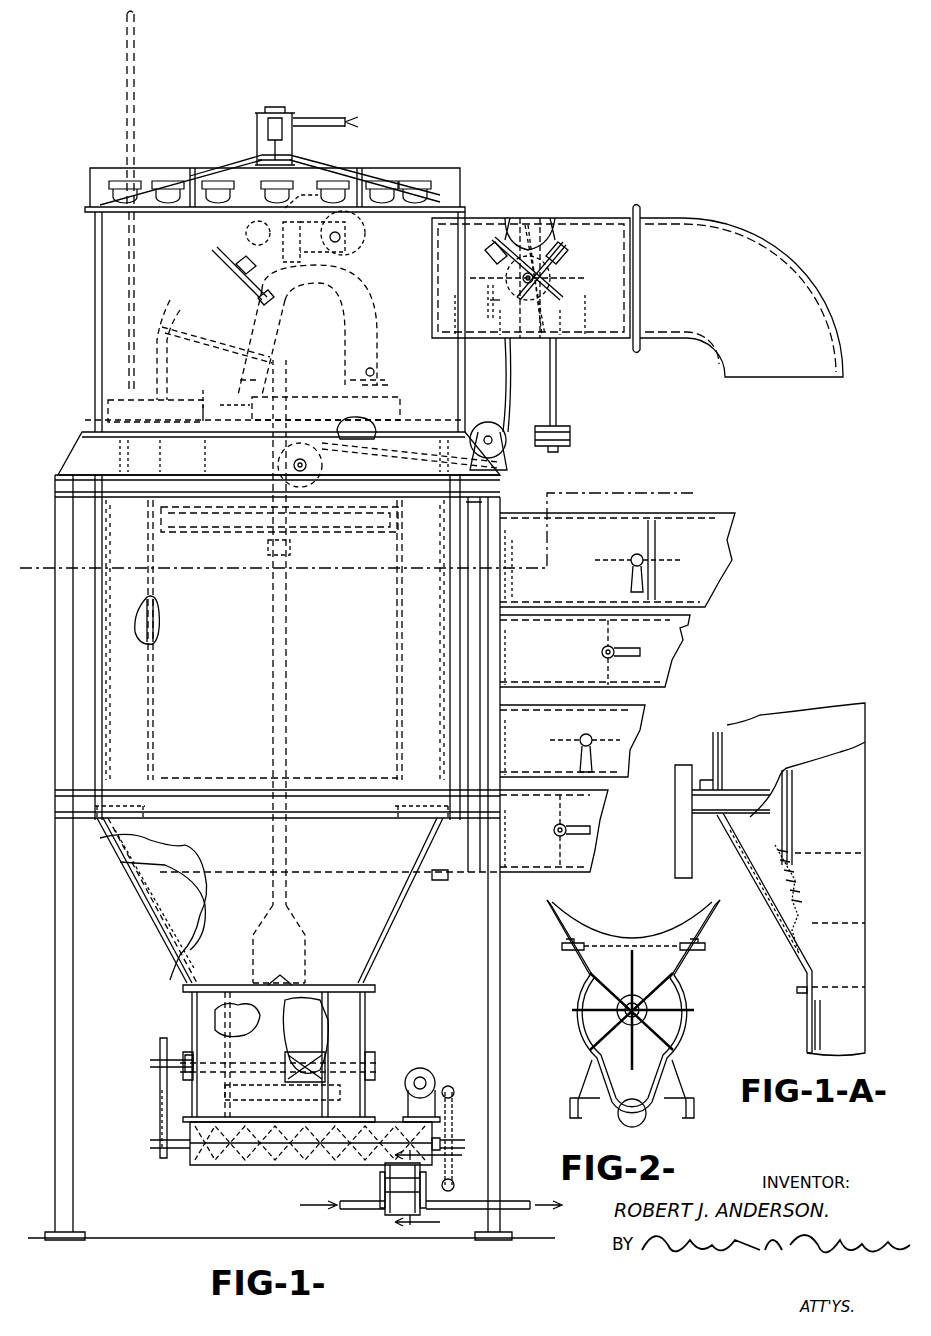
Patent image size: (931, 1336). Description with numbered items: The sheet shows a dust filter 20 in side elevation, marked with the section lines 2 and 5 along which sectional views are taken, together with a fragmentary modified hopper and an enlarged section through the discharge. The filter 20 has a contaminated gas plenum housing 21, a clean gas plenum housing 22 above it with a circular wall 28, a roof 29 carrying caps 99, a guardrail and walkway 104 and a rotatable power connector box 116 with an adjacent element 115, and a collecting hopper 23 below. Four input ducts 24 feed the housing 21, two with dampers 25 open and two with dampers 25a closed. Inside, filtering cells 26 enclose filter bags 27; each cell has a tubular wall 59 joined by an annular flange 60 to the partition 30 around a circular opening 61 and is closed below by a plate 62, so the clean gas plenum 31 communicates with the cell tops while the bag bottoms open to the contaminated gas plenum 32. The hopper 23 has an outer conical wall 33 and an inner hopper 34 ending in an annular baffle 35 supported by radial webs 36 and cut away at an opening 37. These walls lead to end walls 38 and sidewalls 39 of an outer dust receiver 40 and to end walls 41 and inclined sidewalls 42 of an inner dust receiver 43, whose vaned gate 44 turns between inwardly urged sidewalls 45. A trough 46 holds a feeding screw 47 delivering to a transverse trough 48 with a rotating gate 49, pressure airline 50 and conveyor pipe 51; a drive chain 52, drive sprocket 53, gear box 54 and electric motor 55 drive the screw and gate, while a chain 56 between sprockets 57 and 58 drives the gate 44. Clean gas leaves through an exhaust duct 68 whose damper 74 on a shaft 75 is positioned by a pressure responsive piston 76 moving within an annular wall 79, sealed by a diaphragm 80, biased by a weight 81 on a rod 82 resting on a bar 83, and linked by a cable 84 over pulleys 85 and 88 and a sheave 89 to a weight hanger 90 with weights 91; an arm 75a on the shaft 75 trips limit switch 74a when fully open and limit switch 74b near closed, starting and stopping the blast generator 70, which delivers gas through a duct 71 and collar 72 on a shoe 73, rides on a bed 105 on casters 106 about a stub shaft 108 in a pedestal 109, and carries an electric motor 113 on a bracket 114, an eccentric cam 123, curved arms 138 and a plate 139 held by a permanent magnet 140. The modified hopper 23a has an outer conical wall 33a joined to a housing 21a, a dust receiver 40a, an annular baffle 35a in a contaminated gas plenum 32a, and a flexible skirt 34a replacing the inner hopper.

In FIG. 1, the section line 2— 2 is at (435, 1189).
In FIG. 1, the section line 5- 5 is at (30, 550).
In FIG. 1, the dust filter 20 is at (69, 351).
In FIG. 1, the contaminated gas plenum housing 21 is at (84, 701).
In FIG. 1A, the contaminated gas plenum housing 21a is at (704, 756).
In FIG. 1, the clean gas plenum housing 22 is at (84, 289).
In FIG. 1, the collecting hopper 23 is at (165, 977).
In FIG. 1A, the collecting hopper 23a is at (794, 971).
In FIG. 1, the input contaminated gas ducts 24 is at (585, 587).
In FIG. 1, the dampers 25 is at (645, 550).
In FIG. 1, the dampers 25a is at (615, 640).
In FIG. 1, the filtering cells 26 is at (153, 660).
In FIG. 1, the filter bags 27 is at (135, 88).
In FIG. 1, the circular wall 28 is at (175, 258).
In FIG. 1, the roof 29 is at (245, 165).
In FIG. 1, the partition 30 is at (348, 424).
In FIG. 1, the clean gas plenum 31 is at (425, 300).
In FIG. 1, the contaminated gas plenum 32 is at (392, 604).
In FIG. 1A, the contaminated gas plenum 32a is at (850, 800).
In FIG. 1, the outer conical wall 33 is at (145, 905).
In FIG. 1A, the outer conical wall 33a is at (748, 870).
In FIG. 1, the inner hopper 34 is at (180, 915).
In FIG. 1A, the flexible skirt 34a is at (790, 930).
In FIG. 1, the annular baffle 35 is at (150, 870).
In FIG. 1A, the annular baffle 35a is at (798, 878).
In FIG. 1, the radial webs 36 is at (125, 855).
In FIG. 1, the opening 37 is at (446, 879).
In FIG. 1, the triangular end walls 38 is at (192, 1025).
In FIG. 1, the sidewalls 39 is at (214, 1097).
In FIG. 1, the outer dust receiver 40 is at (355, 1040).
In FIG. 1A, the dust receiver 40a is at (814, 1037).
In FIG. 1, the triangular end walls 41 is at (220, 1018).
In FIG. 1, the inclined sidewalls 42 is at (255, 1024).
In FIG. 1, the inner dust receiver 43 is at (294, 1029).
In FIG. 1, the rotating vaned gate 44 is at (290, 1050).
In FIG. 1, the inwardly urged sidewalls 45 is at (300, 1092).
In FIG. 1, the elongated trough 46 is at (245, 1168).
In FIG. 2, the elongated trough 46 is at (565, 912).
In FIG. 1, the feeding screw 47 is at (295, 1160).
In FIG. 2, the feeding screw 47 is at (575, 946).
In FIG. 1, the transverse trough 48 is at (385, 1175).
In FIG. 2, the transverse trough 48 is at (582, 985).
In FIG. 1, the rotating gate 49 is at (383, 1182).
In FIG. 2, the rotating gate 49 is at (586, 1045).
In FIG. 1, the pressure airline 50 is at (345, 1212).
In FIG. 2, the pressure airline 50 is at (655, 1128).
In FIG. 1, the conveyor pipe 51 is at (505, 1201).
In FIG. 1, the drive chain 52 is at (453, 1110).
In FIG. 1, the drive sprocket 53 is at (458, 1085).
In FIG. 1, the gear box 54 is at (448, 1055).
In FIG. 1, the electric motor 55 is at (418, 1068).
In FIG. 1, the drive chain 56 is at (160, 1108).
In FIG. 1, the sprocket 57 is at (155, 1135).
In FIG. 1, the sprocket 58 is at (158, 1080).
In FIG. 1, the tubular wall 59 is at (155, 630).
In FIG. 1, the annular flange 60 is at (76, 447).
In FIG. 1, the circular opening 61 is at (440, 432).
In FIG. 1, the plate 62 is at (425, 822).
In FIG. 1, the exhaust duct 68 is at (715, 218).
In FIG. 1, the gas blast generator 70 is at (182, 328).
In FIG. 1, the duct 71 is at (128, 400).
In FIG. 1, the collar 72 is at (88, 418).
In FIG. 1, the shoe 73 is at (173, 456).
In FIG. 1, the damper 74 is at (520, 218).
In FIG. 1, the limit switch 74a is at (572, 262).
In FIG. 1, the second limit switch 74b is at (484, 258).
In FIG. 1, the horizontal shaft 75 is at (548, 295).
In FIG. 1, the arm 75a is at (490, 240).
In FIG. 1, the pressure responsive piston 76 is at (300, 527).
In FIG. 1, the annular wall 79 is at (392, 512).
In FIG. 1, the rolling annular diaphragm 80 is at (375, 478).
In FIG. 1, the weight 81 is at (290, 922).
In FIG. 1, the rod 82 is at (288, 713).
In FIG. 1, the bar 83 is at (282, 975).
In FIG. 1, the cable 84 is at (508, 393).
In FIG. 1, the pulley 85 is at (277, 465).
In FIG. 1, the pulley 88 is at (505, 455).
In FIG. 1, the sheave 89 is at (479, 302).
In FIG. 1, the weight hanger 90 is at (558, 385).
In FIG. 1, the removable weights 91 is at (570, 438).
In FIG. 1, the cap 99 is at (420, 184).
In FIG. 1, the guardrail and walkway 104 is at (462, 180).
In FIG. 1, the bed 105 is at (320, 391).
In FIG. 1, the casters 106 is at (216, 456).
In FIG. 1, the stub shaft 108 is at (262, 396).
In FIG. 1, the pedestal 109 is at (262, 408).
In FIG. 1, the electric motor 113 is at (248, 230).
In FIG. 1, the bracket 114 is at (301, 196).
In FIG. 1, the arm 115 is at (312, 166).
In FIG. 1, the rotatable power connector box 116 is at (268, 128).
In FIG. 1, the circular cam 123 is at (366, 228).
In FIG. 1, the curved arms 138 is at (366, 304).
In FIG. 1, the heavy rectangular plate 139 is at (238, 280).
In FIG. 1, the permanent magnet 140 is at (270, 300).